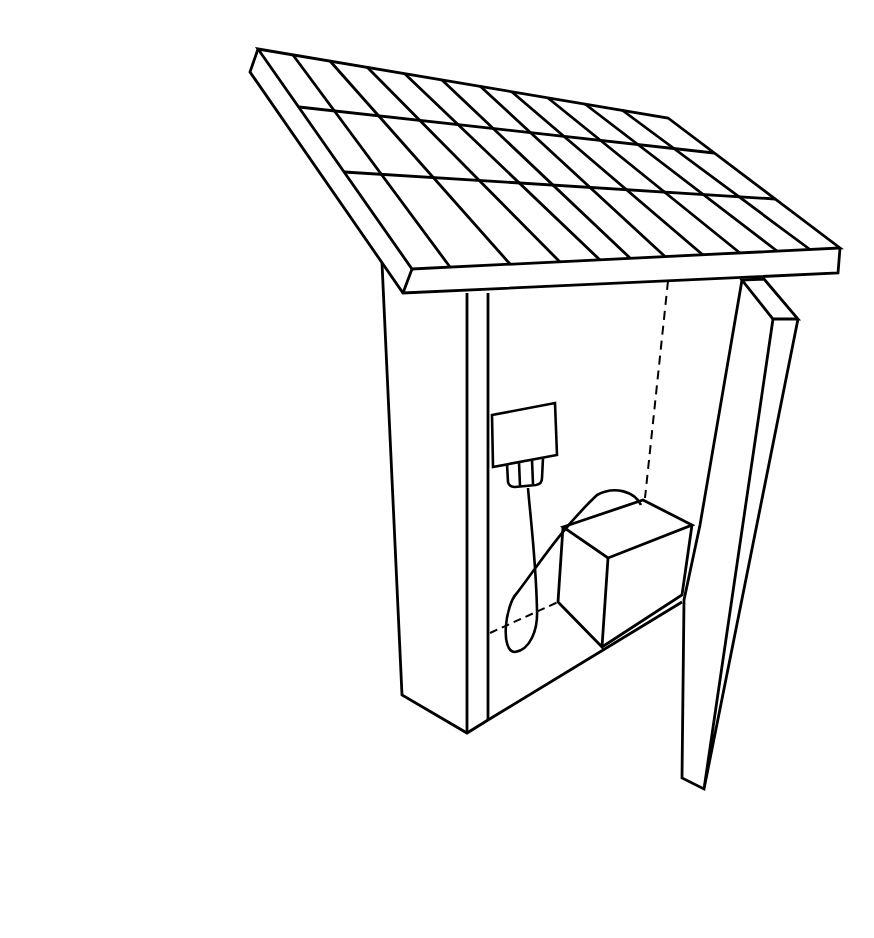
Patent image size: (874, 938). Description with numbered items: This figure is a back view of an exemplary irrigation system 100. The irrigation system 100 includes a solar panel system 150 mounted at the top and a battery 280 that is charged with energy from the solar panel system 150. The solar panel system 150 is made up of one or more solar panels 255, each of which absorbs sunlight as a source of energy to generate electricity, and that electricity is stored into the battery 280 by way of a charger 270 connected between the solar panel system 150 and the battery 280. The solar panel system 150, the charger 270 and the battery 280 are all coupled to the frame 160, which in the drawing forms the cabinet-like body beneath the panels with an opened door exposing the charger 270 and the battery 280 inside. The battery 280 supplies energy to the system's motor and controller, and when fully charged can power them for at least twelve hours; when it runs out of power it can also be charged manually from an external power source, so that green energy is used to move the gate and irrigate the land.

The irrigation system 100 is at (86, 146).
The solar panel system 150 is at (490, 154).
The solar panels 255 is at (337, 143).
The frame 160 is at (413, 455).
The charger 270 is at (522, 408).
The battery 280 is at (667, 507).